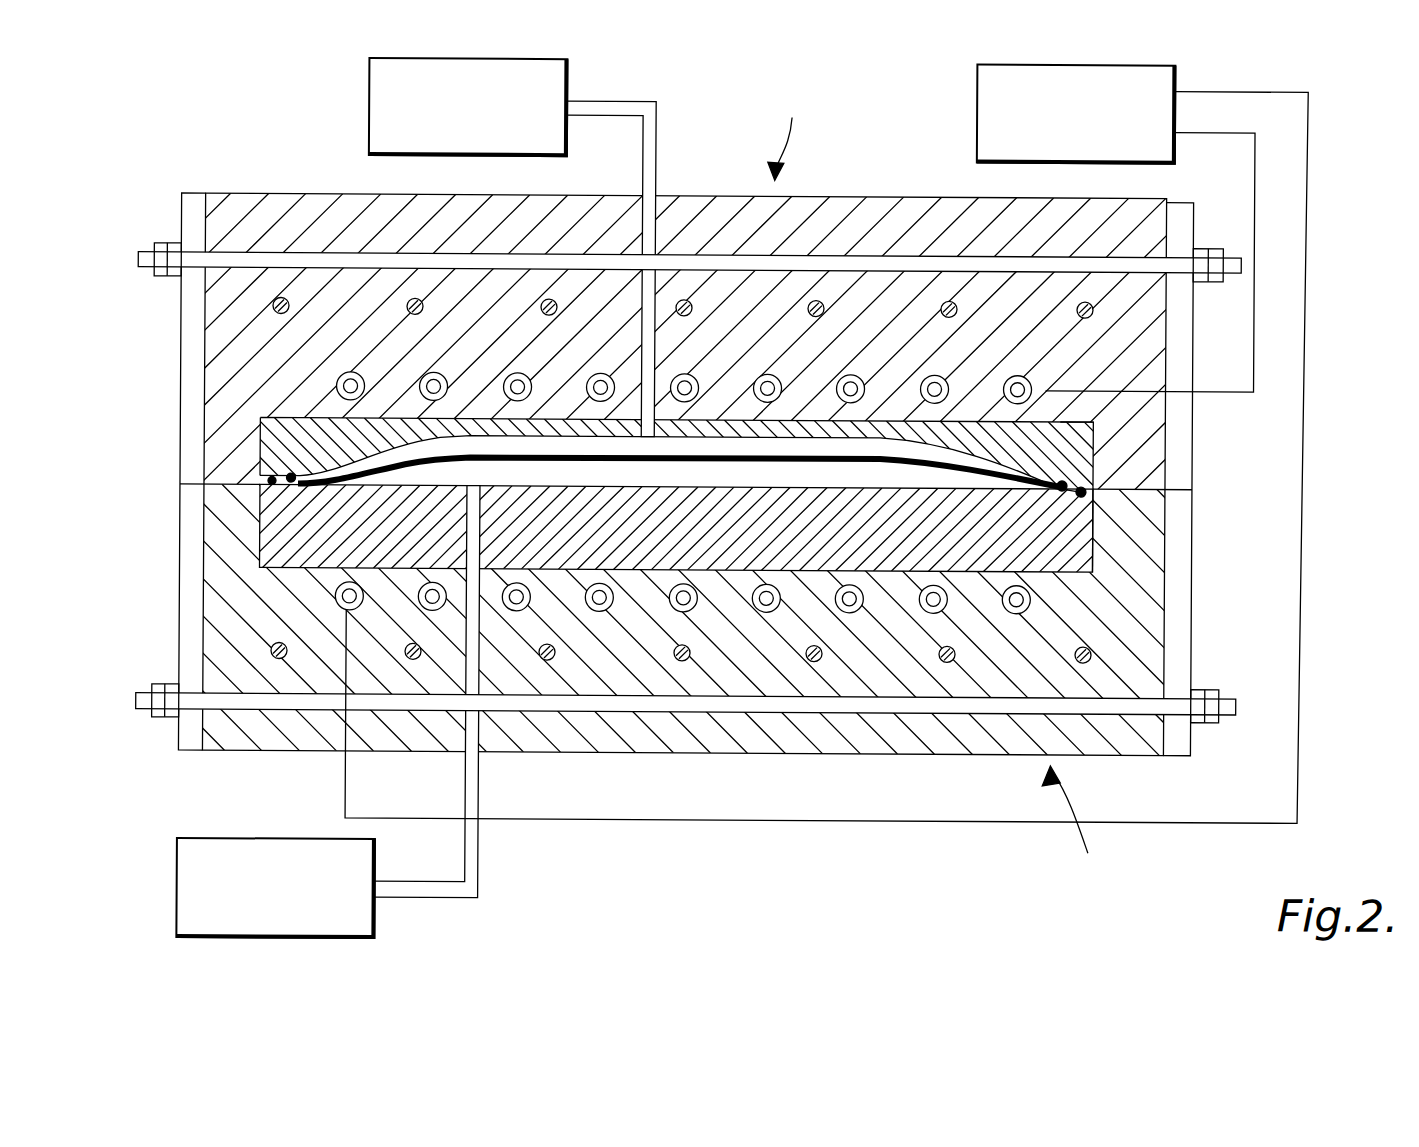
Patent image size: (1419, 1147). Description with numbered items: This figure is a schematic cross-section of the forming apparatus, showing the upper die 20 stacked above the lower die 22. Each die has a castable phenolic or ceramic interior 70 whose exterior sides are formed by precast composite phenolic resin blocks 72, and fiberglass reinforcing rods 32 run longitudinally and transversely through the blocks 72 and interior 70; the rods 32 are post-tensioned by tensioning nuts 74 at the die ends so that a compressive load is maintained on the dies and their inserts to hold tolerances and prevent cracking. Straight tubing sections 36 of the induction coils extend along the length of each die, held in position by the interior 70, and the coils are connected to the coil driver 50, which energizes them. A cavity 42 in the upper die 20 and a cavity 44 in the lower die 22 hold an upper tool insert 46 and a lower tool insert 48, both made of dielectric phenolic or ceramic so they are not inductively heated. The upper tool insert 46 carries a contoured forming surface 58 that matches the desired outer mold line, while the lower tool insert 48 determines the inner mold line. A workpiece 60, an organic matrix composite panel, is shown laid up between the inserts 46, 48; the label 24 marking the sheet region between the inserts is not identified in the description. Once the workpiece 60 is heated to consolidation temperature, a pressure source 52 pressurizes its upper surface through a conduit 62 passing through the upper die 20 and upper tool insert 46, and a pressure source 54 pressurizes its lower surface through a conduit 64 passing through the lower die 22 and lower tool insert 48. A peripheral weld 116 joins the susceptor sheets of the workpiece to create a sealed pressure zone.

The upper die 20 is at (788, 132).
The lower die 22 is at (1076, 823).
The workpiece sheet 24 is at (262, 482).
The fiberglass rods 32 is at (257, 275).
The straight tubing section 36 is at (352, 371).
The cavity 42 is at (1100, 430).
The cavity 44 is at (1100, 505).
The upper tool insert 46 is at (262, 432).
The lower tool insert 48 is at (262, 548).
The coil driver 50 is at (975, 105).
The pressure source 52 is at (367, 102).
The pressure source 54 is at (179, 875).
The contoured forming surface 58 is at (1068, 478).
The workpiece 60 is at (1077, 491).
The conduit 62 is at (658, 190).
The conduit 64 is at (482, 852).
The interior 70 is at (300, 193).
The precast composite phenolic resin blocks 72 is at (193, 358).
The tensioning nuts 74 is at (162, 277).
The weld 116 is at (1087, 487).